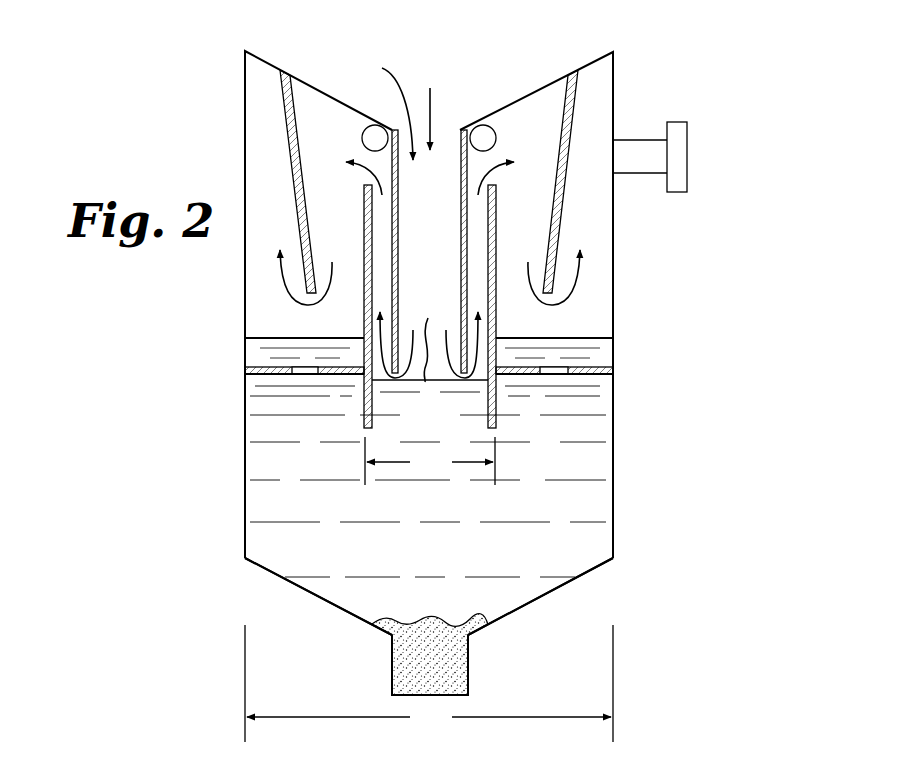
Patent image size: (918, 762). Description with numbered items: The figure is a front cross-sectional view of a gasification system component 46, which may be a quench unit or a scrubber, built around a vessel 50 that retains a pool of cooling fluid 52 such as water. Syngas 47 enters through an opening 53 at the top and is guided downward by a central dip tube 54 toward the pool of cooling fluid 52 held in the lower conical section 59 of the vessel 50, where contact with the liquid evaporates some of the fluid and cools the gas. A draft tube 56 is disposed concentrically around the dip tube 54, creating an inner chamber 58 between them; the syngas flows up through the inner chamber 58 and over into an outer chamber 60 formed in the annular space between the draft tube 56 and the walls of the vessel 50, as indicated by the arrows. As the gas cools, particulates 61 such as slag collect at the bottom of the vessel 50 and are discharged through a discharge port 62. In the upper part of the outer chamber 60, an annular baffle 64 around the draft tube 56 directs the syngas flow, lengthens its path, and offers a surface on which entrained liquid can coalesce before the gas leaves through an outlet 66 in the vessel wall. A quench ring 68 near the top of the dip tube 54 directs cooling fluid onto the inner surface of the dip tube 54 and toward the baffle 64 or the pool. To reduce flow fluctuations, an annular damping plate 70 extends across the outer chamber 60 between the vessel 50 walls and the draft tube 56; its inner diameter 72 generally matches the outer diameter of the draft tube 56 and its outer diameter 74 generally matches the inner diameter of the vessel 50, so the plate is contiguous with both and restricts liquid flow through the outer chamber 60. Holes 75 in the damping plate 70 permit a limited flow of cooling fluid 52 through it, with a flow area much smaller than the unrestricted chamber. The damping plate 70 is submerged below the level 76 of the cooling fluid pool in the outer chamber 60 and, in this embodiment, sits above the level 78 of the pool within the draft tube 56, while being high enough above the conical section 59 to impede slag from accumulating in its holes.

The gasification system component 46 is at (742, 76).
The syngas 47 is at (430, 92).
The vessel 50 is at (613, 238).
The cooling fluid 52 is at (258, 498).
The opening 53 is at (381, 104).
The dip tube 54 is at (402, 256).
The draft tube 56 is at (363, 308).
The inner chamber 58 is at (474, 219).
The conical section 59 is at (560, 588).
The outer chamber 60 is at (600, 273).
The particulates 61 is at (395, 668).
The discharge port 62 is at (468, 665).
The annular baffle 64 is at (577, 102).
The outlet 66 is at (687, 122).
The quench ring 68 is at (492, 125).
The damping plate 70 is at (258, 375).
The inner diameter 72 is at (430, 461).
The outer diameter 74 is at (429, 683).
The holes 75 is at (302, 372).
The level of cooling fluid pool in outer chamber 76 is at (267, 338).
The level of cooling fluid pool within draft tube 78 is at (438, 338).